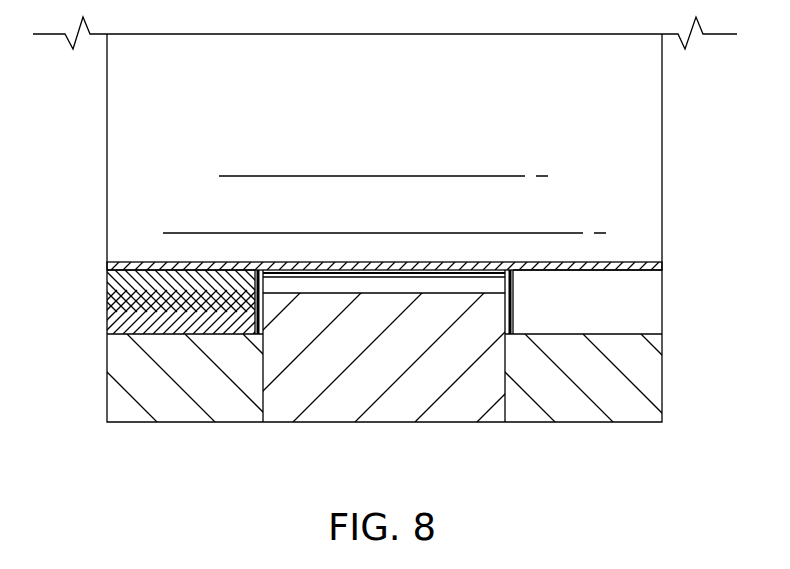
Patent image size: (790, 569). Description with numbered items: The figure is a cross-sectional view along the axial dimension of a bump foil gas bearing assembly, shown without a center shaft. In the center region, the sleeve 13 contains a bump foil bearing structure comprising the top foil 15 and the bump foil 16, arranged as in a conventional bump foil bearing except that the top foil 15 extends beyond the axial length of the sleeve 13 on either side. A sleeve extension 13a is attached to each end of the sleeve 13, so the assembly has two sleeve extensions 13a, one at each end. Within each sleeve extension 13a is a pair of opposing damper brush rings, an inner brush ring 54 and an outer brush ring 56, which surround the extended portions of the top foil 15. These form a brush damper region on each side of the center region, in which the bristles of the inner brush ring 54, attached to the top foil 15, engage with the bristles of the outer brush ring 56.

The top foil 15 is at (133, 262).
The bump foil 16 is at (393, 278).
The inner brush ring 54 is at (107, 280).
The outer brush ring 56 is at (107, 323).
The sleeve 13 is at (502, 433).
The sleeve extension 13a is at (260, 433).